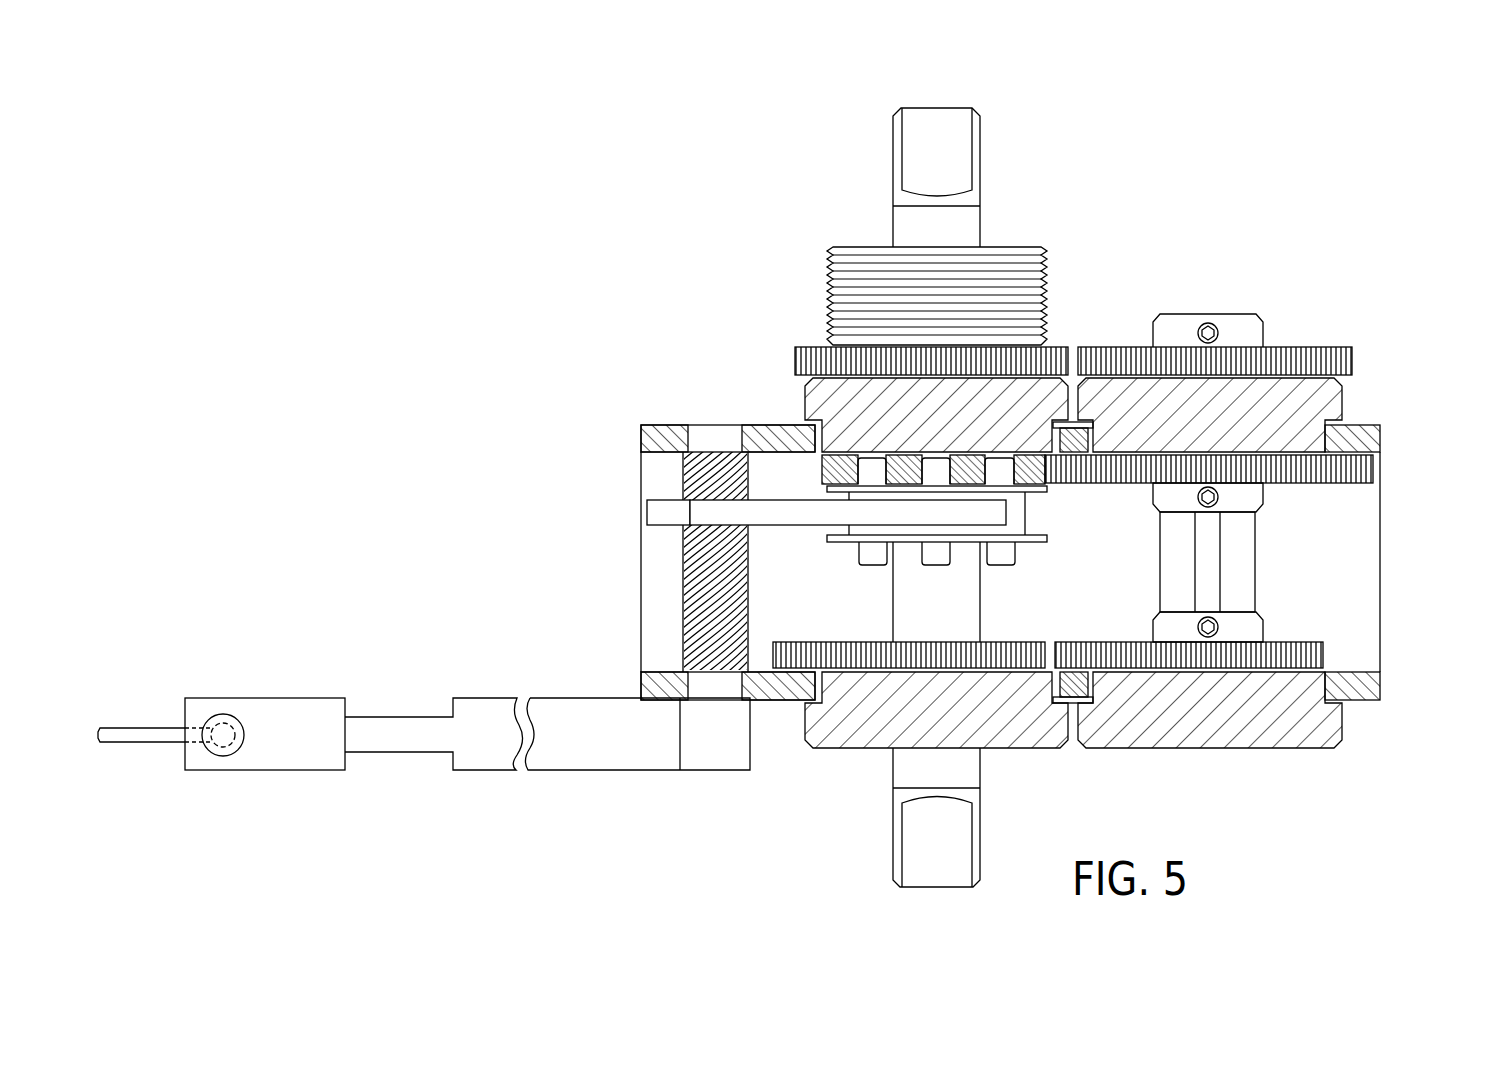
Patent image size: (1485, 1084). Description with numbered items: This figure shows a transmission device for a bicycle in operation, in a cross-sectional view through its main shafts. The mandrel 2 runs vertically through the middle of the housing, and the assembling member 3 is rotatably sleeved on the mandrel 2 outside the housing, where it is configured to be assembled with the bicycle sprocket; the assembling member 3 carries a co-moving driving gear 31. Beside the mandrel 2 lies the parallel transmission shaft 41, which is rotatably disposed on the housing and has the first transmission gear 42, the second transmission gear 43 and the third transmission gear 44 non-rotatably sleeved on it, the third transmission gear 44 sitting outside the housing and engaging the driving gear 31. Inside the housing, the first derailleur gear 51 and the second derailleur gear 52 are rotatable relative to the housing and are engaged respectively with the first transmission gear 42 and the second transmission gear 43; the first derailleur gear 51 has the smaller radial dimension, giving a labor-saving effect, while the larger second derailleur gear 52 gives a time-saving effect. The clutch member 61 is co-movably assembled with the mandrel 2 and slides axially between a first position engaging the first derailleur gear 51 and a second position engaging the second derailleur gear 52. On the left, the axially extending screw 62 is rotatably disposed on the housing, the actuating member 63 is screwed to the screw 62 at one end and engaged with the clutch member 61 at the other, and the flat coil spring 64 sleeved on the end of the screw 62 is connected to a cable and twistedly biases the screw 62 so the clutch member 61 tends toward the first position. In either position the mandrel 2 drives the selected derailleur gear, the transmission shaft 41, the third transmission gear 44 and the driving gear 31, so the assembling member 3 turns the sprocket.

The mandrel 2 is at (902, 762).
The assembling member 3 is at (855, 242).
The driving gear 31 is at (1030, 360).
The transmission shaft 41 is at (1248, 553).
The first transmission gear 42 is at (1355, 467).
The second transmission gear 43 is at (1318, 656).
The third transmission gear 44 is at (1310, 358).
The first derailleur gear 51 is at (820, 472).
The second derailleur gear 52 is at (792, 658).
The clutch member 61 is at (865, 530).
The screw 62 is at (698, 475).
The actuating member 63 is at (665, 512).
The flat coil spring 64 is at (642, 757).